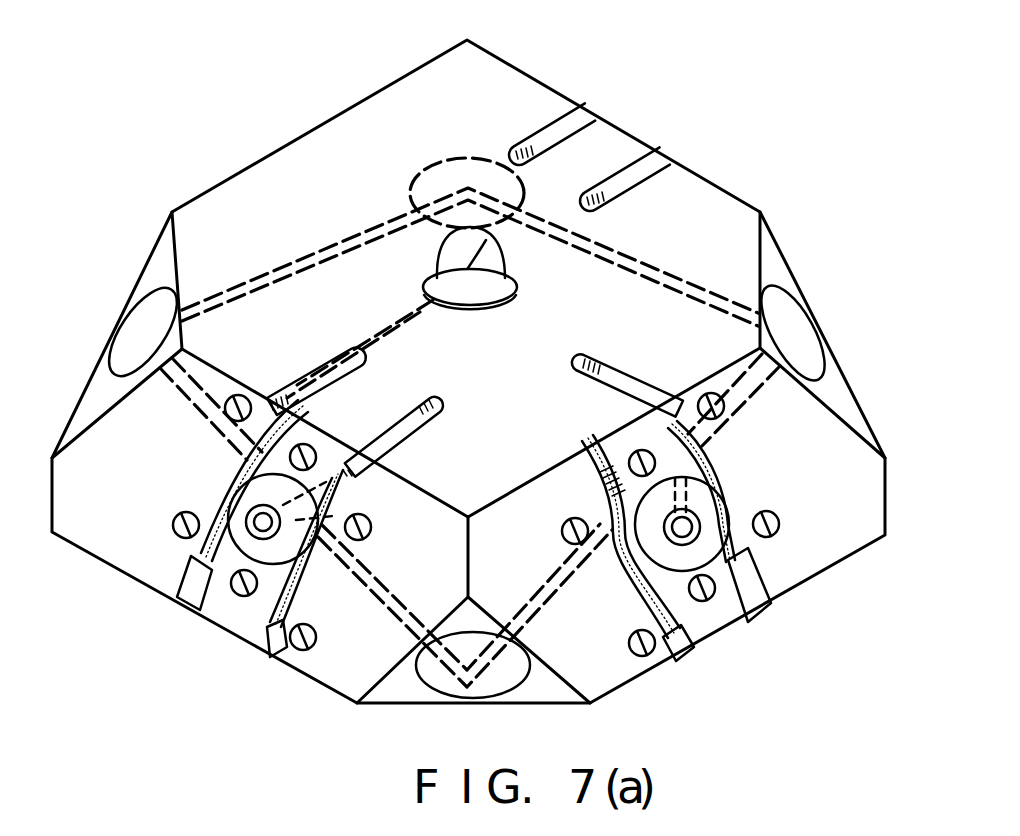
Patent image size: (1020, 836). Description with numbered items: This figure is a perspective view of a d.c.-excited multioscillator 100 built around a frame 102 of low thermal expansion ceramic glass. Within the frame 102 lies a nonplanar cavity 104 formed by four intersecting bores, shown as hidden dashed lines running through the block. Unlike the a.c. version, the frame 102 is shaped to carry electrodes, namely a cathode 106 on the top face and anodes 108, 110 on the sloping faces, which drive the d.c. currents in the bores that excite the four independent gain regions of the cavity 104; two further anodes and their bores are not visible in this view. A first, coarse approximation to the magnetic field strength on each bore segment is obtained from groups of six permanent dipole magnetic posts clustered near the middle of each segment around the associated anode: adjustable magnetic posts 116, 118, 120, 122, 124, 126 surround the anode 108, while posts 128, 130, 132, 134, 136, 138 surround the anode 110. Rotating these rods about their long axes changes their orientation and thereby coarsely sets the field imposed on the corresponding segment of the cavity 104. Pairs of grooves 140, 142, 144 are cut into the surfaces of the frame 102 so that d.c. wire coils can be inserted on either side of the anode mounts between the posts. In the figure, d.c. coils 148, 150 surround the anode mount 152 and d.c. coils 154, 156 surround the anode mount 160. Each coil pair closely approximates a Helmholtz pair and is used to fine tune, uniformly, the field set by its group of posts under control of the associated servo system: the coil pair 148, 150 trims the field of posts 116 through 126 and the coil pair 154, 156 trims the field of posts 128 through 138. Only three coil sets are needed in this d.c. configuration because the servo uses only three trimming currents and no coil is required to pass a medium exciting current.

The d.c. multioscillator 100 is at (657, 118).
The frame 102 is at (695, 192).
The nonplanar cavity 104 is at (692, 283).
The cathode 106 is at (507, 245).
The anode 108 is at (242, 546).
The anode 110 is at (703, 507).
The adjustable magnetic post 116 is at (228, 397).
The adjustable magnetic post 118 is at (306, 446).
The adjustable magnetic post 120 is at (371, 527).
The adjustable magnetic post 122 is at (173, 525).
The adjustable magnetic post 124 is at (233, 598).
The adjustable magnetic post 126 is at (314, 643).
The magnetic post 128 is at (561, 530).
The magnetic post 130 is at (636, 446).
The magnetic post 132 is at (714, 395).
The magnetic post 134 is at (648, 657).
The magnetic post 136 is at (711, 601).
The magnetic post 138 is at (779, 518).
The groove 140 is at (196, 592).
The groove 142 is at (751, 607).
The groove 144 is at (607, 192).
The d.c. coil 148 is at (230, 476).
The d.c. coil 150 is at (299, 577).
The anode mount 152 is at (388, 474).
The d.c. coil 154 is at (648, 594).
The d.c. coil 156 is at (740, 550).
The anode mount 160 is at (693, 487).